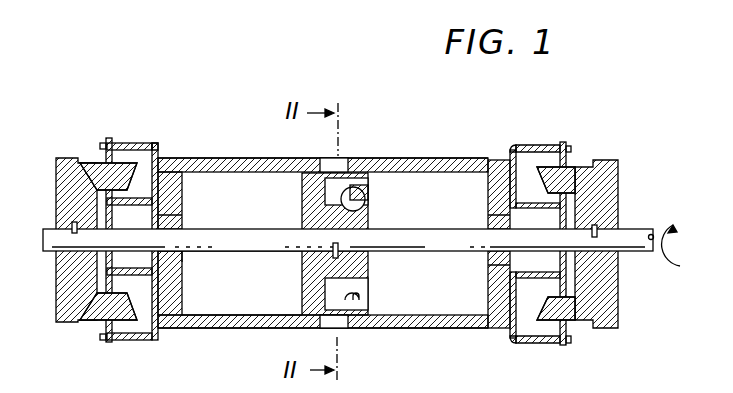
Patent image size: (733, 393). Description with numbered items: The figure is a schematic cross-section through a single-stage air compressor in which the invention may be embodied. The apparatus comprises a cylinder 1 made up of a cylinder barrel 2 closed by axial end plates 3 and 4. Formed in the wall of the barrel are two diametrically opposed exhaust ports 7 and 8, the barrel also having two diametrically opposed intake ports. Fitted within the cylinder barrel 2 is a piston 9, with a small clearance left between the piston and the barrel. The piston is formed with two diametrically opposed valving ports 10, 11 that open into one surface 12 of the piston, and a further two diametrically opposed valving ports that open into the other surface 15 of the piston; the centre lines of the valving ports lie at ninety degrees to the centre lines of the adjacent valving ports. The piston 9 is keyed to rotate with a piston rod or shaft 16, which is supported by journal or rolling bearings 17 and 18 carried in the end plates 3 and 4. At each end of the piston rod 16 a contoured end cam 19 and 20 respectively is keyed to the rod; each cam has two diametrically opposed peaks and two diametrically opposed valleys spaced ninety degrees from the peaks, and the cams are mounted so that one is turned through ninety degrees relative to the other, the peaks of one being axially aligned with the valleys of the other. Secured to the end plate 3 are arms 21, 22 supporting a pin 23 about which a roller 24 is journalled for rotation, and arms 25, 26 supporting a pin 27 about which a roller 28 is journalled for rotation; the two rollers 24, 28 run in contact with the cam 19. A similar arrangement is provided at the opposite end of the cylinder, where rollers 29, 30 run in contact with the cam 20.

The cylinder 1 is at (398, 329).
The cylinder barrel 2 is at (420, 158).
The axial end plate 3 is at (488, 184).
The axial end plate 4 is at (181, 193).
The exhaust port 7 is at (350, 160).
The exhaust port 8 is at (352, 328).
The piston 9 is at (302, 195).
The valving port 10 is at (370, 214).
The valving port 11 is at (352, 295).
The surface of the piston 12 is at (368, 267).
The surface of the piston 15 is at (302, 292).
The piston rod 16 is at (444, 249).
The bearing 17 is at (488, 223).
The bearing 18 is at (184, 254).
The contoured end cam 19 is at (617, 176).
The contoured end cam 20 is at (56, 168).
The arm 21 is at (537, 145).
The arm 22 is at (524, 145).
The pin 23 is at (563, 142).
The roller 24 is at (580, 167).
The arm 25 is at (512, 283).
The arm 26 is at (512, 344).
The pin 27 is at (560, 346).
The roller 28 is at (577, 322).
The roller 29 is at (90, 160).
The roller 30 is at (90, 316).